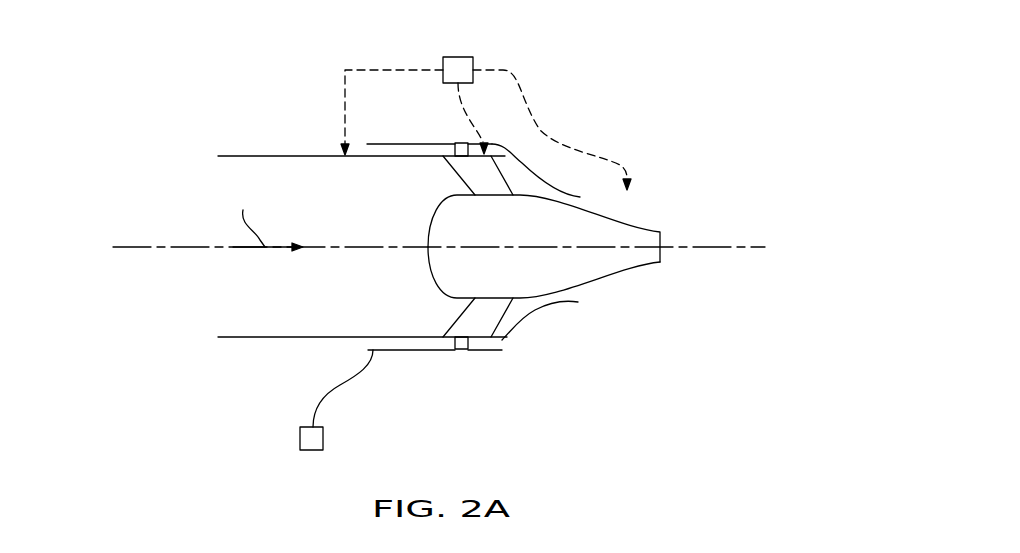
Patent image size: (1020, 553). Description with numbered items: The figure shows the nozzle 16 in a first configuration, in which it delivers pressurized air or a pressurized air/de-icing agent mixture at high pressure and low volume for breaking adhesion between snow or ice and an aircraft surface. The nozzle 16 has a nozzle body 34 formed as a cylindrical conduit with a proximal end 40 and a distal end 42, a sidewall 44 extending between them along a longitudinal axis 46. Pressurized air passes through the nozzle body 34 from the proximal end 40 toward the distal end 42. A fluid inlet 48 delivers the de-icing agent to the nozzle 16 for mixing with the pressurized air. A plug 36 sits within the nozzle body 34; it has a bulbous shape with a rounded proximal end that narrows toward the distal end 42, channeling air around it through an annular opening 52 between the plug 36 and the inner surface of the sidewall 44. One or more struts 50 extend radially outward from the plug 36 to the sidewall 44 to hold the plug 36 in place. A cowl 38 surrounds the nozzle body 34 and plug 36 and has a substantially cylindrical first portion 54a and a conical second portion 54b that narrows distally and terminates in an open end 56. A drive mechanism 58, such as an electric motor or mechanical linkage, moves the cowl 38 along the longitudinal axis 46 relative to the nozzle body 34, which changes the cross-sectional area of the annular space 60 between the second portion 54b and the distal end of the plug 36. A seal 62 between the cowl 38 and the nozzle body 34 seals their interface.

The nozzle 16 is at (621, 91).
The nozzle body 34 is at (303, 337).
The plug 36 is at (458, 258).
The cowl 38 is at (556, 322).
The proximal end 40 is at (199, 344).
The distal end 42 is at (503, 353).
The sidewall 44 is at (270, 333).
The longitudinal axis 46 is at (742, 250).
The fluid inlet 48 is at (462, 72).
The struts 50 is at (450, 183).
The annular opening 52 is at (441, 318).
The first portion 54a is at (397, 350).
The second portion 54b is at (525, 328).
The open end 56 is at (586, 287).
The drive mechanism 58 is at (300, 437).
The annular space 60 is at (569, 198).
The seal 62 is at (436, 150).